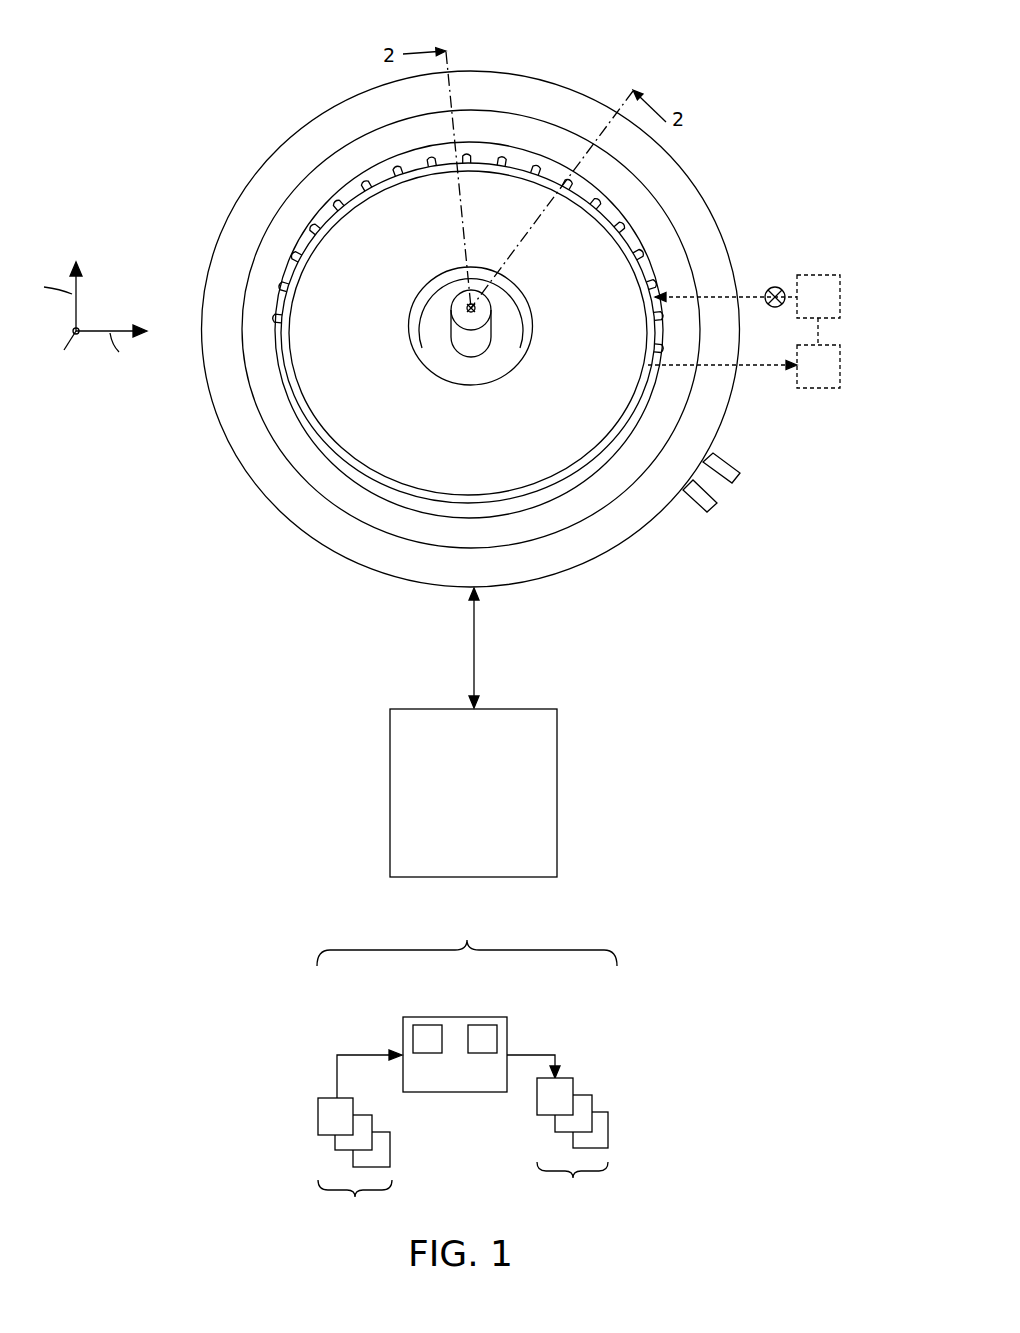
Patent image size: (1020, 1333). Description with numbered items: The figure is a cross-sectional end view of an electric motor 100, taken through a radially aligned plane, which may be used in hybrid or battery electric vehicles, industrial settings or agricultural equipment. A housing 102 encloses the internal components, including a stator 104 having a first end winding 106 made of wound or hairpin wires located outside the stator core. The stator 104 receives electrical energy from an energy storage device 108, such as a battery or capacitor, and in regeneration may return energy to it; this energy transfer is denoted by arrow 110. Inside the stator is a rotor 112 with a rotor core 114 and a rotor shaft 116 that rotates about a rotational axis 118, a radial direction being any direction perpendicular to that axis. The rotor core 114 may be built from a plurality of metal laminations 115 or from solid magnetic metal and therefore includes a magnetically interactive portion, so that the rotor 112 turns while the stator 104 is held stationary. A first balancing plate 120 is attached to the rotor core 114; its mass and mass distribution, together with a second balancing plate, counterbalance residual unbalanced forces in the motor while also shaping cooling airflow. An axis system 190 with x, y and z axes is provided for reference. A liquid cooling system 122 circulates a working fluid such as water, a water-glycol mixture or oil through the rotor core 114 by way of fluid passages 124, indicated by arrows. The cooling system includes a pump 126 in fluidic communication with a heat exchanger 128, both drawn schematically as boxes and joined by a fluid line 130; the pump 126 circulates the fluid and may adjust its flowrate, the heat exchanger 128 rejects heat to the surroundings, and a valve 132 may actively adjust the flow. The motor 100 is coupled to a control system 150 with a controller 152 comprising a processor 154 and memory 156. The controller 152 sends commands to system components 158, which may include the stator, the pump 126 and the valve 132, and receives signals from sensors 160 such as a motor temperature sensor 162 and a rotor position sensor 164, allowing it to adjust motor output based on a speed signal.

The electric motor 100 is at (199, 31).
The housing 102 is at (693, 206).
The stator 104 is at (710, 261).
The first end winding 106 is at (693, 239).
The energy storage device 108 is at (398, 709).
The arrow 110 is at (497, 655).
The rotor 112 is at (521, 323).
The rotor core 114 is at (490, 372).
The metal laminations 115 is at (523, 359).
The rotor shaft 116 is at (468, 345).
The rotational axis 118 is at (454, 313).
The first balancing plate 120 is at (603, 401).
The liquid cooling system 122 is at (783, 353).
The fluid passages 124 is at (748, 299).
The pump 126 is at (841, 306).
The heat exchanger 128 is at (818, 389).
The fluid line 130 is at (820, 330).
The valve 132 is at (772, 289).
The control system 150 is at (467, 1066).
The controller 152 is at (430, 1016).
The processor 154 is at (413, 1042).
The memory 156 is at (497, 1042).
The system components 158 is at (557, 1128).
The sensors 160 is at (360, 1134).
The motor temperature sensor 162 is at (741, 478).
The rotor position sensor 164 is at (717, 508).
The axis system 190 is at (130, 280).